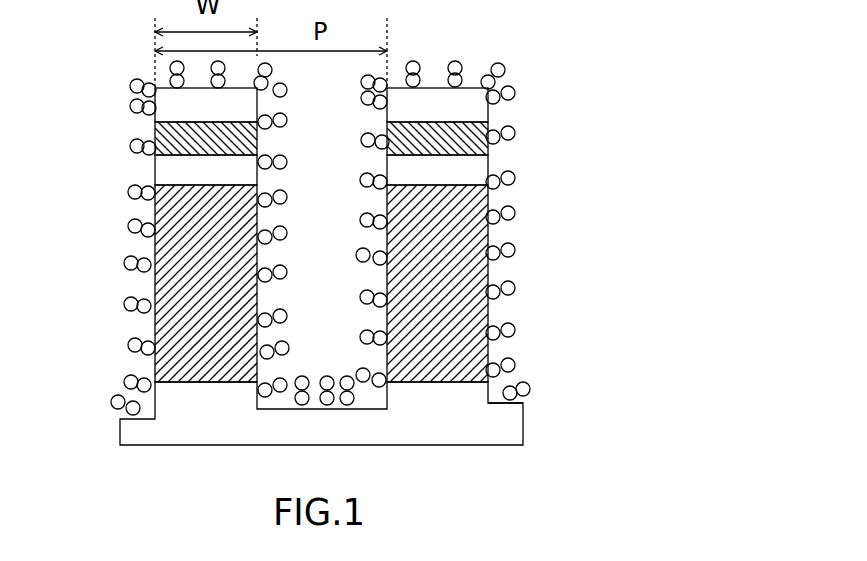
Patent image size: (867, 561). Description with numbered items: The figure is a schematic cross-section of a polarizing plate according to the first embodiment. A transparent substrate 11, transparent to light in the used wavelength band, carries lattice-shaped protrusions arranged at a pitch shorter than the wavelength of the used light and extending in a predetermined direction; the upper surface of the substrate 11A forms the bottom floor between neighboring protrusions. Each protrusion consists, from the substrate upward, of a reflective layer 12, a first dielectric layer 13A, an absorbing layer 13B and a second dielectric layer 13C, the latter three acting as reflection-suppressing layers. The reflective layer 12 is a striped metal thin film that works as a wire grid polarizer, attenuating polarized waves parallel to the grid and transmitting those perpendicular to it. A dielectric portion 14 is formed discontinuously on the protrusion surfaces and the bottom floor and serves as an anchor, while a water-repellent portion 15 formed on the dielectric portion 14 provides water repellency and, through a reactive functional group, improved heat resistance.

The transparent substrate 11 is at (523, 420).
The upper surface of substrate 11A is at (505, 392).
The reflective layer 12 is at (488, 275).
The first dielectric layer 13A is at (488, 167).
The absorbing layer 13B is at (488, 123).
The second dielectric layer 13C is at (488, 110).
The dielectric portion 14 is at (494, 80).
The water-repellent portion 15 is at (504, 67).